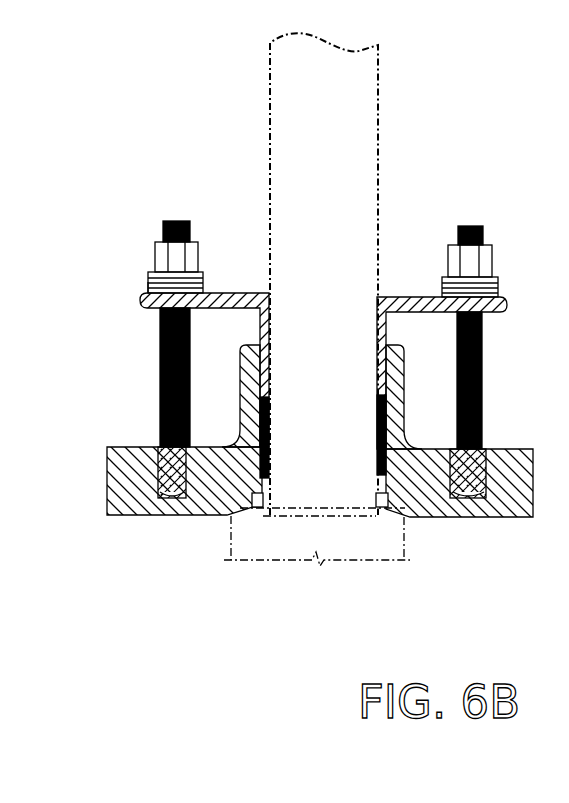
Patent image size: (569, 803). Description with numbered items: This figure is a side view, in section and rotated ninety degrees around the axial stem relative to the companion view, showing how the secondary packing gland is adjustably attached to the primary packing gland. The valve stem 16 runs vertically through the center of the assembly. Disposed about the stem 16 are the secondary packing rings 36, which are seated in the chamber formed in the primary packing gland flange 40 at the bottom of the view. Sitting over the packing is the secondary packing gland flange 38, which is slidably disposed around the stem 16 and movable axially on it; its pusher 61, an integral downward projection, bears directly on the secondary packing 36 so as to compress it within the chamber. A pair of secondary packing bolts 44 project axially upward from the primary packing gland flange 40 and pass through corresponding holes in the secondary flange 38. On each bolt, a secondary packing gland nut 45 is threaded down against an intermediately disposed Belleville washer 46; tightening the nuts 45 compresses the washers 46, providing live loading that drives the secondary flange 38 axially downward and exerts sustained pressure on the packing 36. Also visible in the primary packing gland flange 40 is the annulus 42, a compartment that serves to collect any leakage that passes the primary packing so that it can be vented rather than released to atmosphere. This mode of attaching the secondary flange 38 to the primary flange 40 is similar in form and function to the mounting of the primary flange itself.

The valve stem 16 is at (342, 135).
The secondary packing chamber packing rings 36 is at (258, 420).
The secondary packing gland flange 38 is at (401, 296).
The primary packing gland flange 40 is at (208, 498).
The annulus 42 is at (382, 505).
The secondary packing bolts 44 is at (166, 210).
The secondary packing gland nuts 45 is at (485, 262).
The secondary packing gland Belleville washers 46 is at (150, 282).
The pusher 61 is at (380, 345).